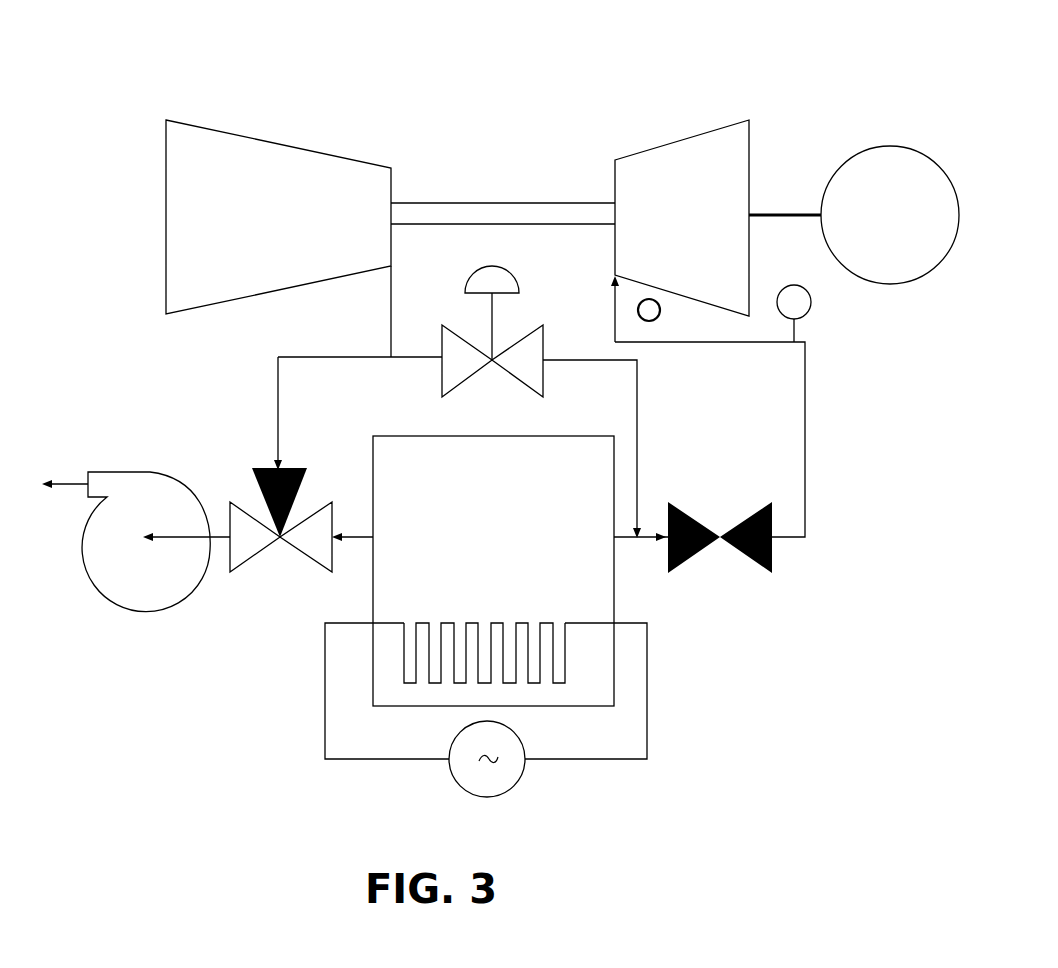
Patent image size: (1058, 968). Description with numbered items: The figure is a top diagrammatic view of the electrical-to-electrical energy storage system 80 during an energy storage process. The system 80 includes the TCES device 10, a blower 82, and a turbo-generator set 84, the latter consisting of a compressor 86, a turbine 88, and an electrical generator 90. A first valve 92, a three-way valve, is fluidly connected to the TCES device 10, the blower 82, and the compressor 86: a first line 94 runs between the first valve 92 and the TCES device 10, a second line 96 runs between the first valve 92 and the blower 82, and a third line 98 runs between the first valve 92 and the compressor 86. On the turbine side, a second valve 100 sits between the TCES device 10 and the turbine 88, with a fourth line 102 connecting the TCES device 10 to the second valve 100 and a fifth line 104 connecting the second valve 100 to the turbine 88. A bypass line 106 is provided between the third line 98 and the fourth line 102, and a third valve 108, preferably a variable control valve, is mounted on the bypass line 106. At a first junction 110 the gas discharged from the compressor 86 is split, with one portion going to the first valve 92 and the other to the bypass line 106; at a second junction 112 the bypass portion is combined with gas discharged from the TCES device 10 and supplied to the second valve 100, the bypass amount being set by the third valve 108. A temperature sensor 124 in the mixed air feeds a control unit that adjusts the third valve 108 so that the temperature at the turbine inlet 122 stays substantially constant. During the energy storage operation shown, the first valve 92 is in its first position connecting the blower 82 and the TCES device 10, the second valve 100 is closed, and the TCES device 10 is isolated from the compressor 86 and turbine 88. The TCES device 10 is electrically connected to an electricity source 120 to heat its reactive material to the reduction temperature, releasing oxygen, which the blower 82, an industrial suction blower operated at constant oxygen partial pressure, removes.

The electrical-to-electrical energy storage system 80 is at (500, 423).
The turbo-generator set 84 is at (743, 192).
The compressor 86 is at (166, 120).
The turbine 88 is at (615, 162).
The electrical generator 90 is at (851, 152).
The turbine inlet 122 is at (612, 272).
The temperature sensor 124 is at (811, 302).
The third line 98 is at (391, 305).
The first junction 110 is at (388, 357).
The third valve 108 is at (528, 332).
The bypass line 106 is at (637, 398).
The second junction 112 is at (638, 533).
The fourth line 102 is at (620, 538).
The second valve 100 is at (766, 505).
The fifth line 104 is at (800, 538).
The TCES device 10 is at (418, 436).
The electricity source 120 is at (522, 770).
The blower 82 is at (155, 472).
The second line 96 is at (213, 538).
The first valve 92 is at (320, 570).
The first line 94 is at (363, 533).